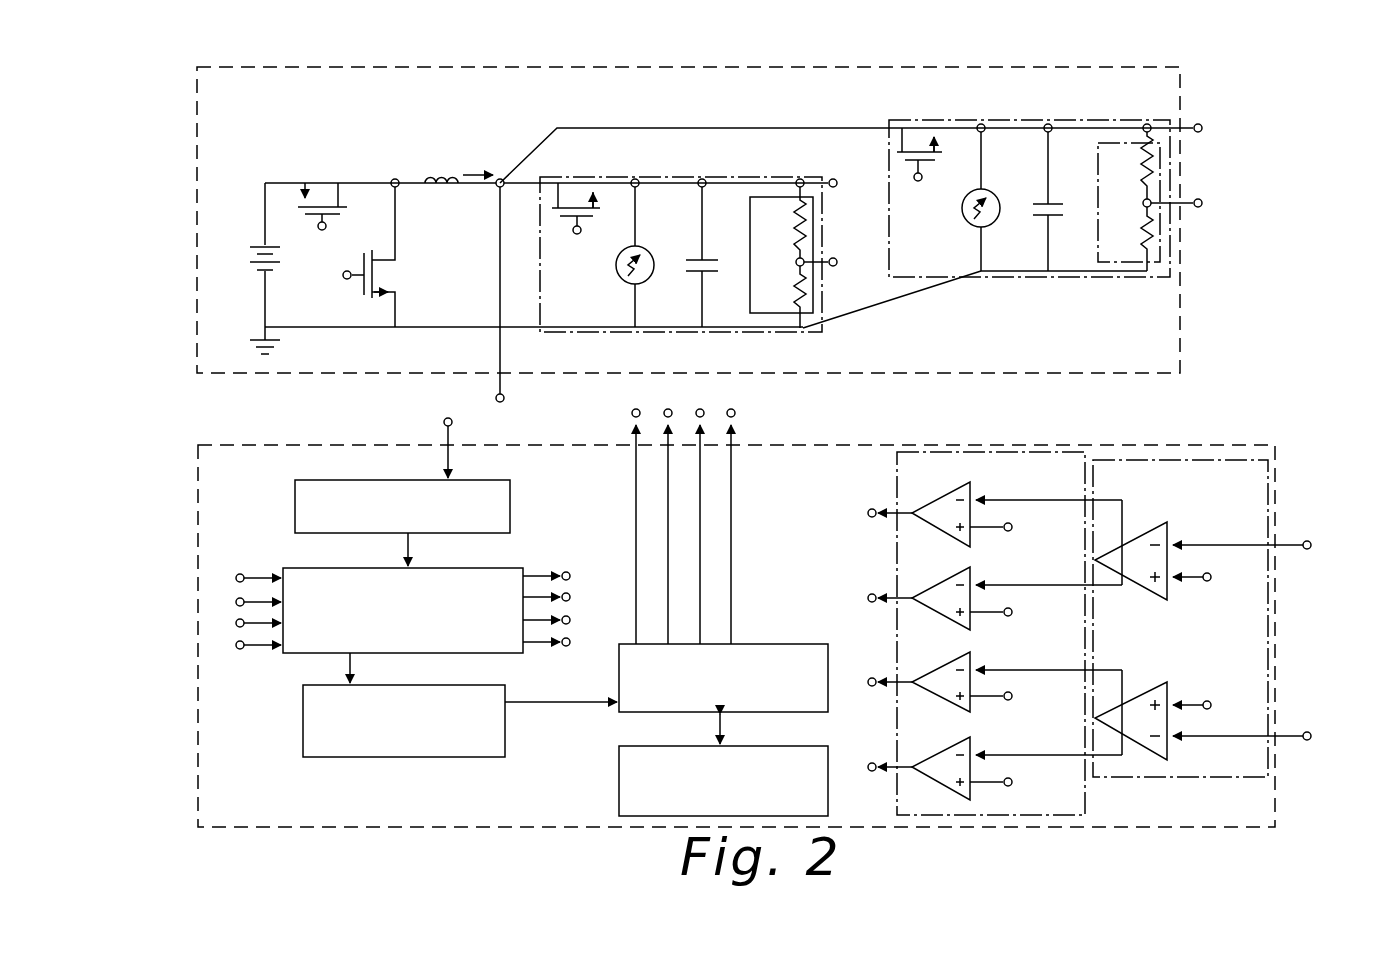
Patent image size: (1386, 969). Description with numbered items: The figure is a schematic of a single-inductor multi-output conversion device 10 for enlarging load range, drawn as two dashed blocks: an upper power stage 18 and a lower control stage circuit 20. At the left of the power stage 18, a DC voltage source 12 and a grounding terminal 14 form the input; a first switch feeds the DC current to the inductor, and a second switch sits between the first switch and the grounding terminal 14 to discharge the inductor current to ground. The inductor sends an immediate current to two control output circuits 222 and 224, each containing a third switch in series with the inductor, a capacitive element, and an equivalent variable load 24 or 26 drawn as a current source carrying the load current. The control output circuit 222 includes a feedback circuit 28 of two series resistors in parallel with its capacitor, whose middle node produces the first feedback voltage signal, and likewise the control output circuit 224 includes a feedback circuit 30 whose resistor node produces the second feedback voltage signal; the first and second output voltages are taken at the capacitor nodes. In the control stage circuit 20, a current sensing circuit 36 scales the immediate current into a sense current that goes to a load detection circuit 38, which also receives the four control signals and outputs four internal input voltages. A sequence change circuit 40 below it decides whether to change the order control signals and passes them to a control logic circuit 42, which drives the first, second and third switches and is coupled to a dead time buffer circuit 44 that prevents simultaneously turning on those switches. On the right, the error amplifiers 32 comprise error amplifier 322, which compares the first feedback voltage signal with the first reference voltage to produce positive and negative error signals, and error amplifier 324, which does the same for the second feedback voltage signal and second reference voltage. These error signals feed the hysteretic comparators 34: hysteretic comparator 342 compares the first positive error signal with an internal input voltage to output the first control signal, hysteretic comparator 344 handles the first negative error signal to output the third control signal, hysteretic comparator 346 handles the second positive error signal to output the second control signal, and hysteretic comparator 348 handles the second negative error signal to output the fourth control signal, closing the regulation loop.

The SIMO conversion device 10 is at (168, 103).
The power stage 18 is at (197, 232).
The DC voltage source 12 is at (265, 244).
The grounding terminal 14 is at (265, 337).
The control output circuit 222 is at (665, 177).
The control output circuit 224 is at (997, 120).
The equivalent variable load 24 is at (621, 258).
The equivalent variable load 26 is at (970, 197).
The feedback circuit 28 is at (750, 227).
The feedback circuit 30 is at (1098, 166).
The control stage circuit 20 is at (198, 638).
The current sensing circuit 36 is at (295, 505).
The load detection circuit 38 is at (522, 568).
The sequence change circuit 40 is at (303, 722).
The control logic circuit 42 is at (786, 644).
The dead time buffer circuit 44 is at (619, 779).
The hysteretic comparators 34 is at (897, 470).
The error amplifiers 32 is at (1178, 777).
The hysteretic comparator 342 is at (970, 496).
The hysteretic comparator 344 is at (970, 574).
The hysteretic comparator 346 is at (970, 659).
The hysteretic comparator 348 is at (970, 742).
The error amplifier 322 is at (1168, 527).
The error amplifier 324 is at (1168, 682).